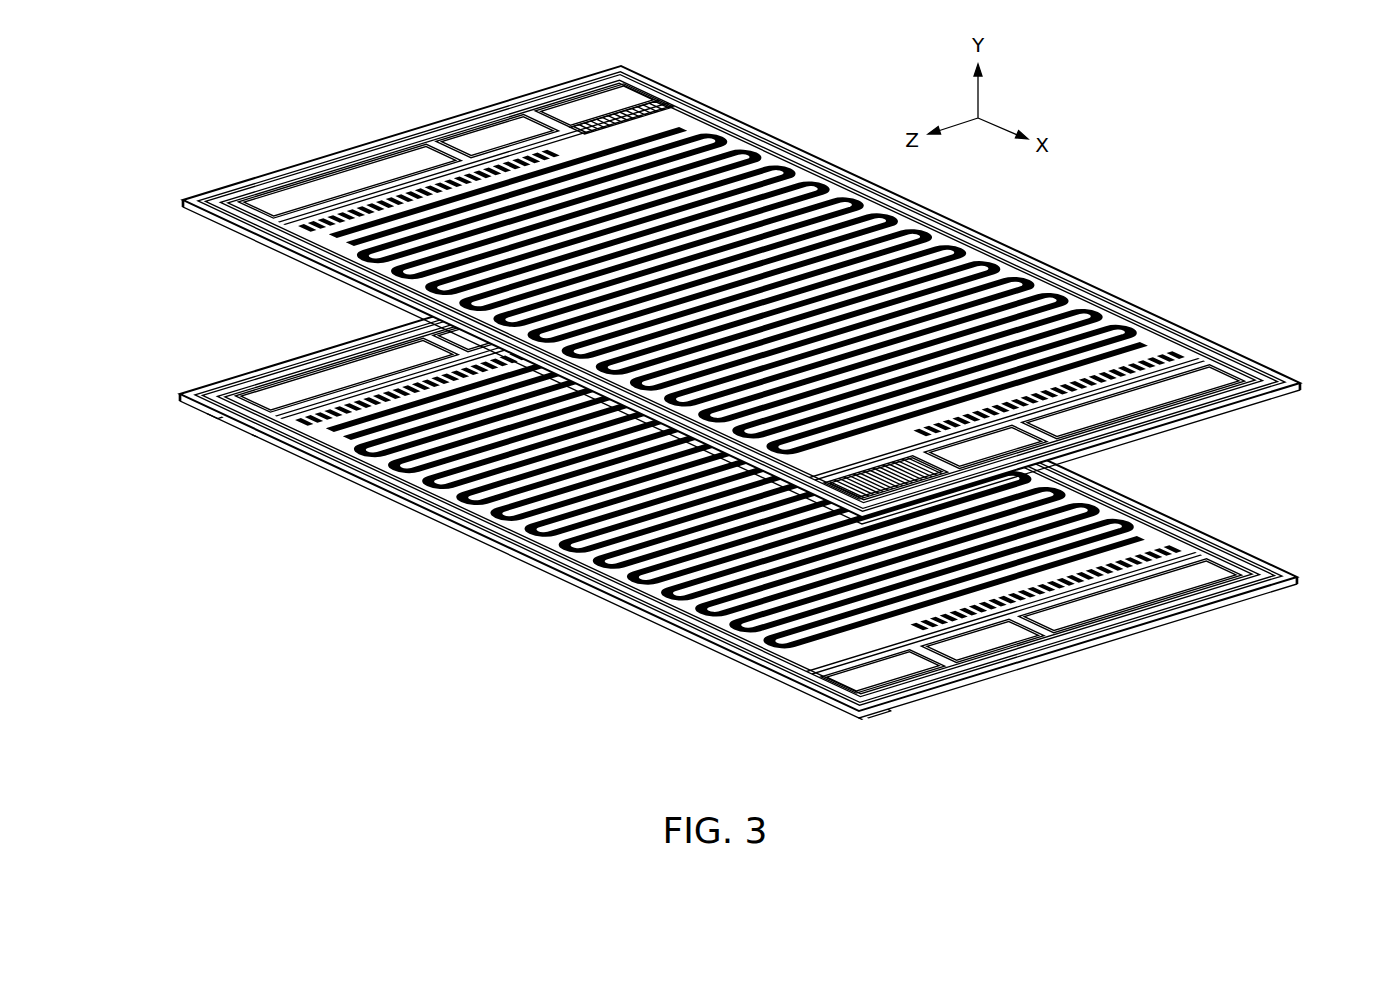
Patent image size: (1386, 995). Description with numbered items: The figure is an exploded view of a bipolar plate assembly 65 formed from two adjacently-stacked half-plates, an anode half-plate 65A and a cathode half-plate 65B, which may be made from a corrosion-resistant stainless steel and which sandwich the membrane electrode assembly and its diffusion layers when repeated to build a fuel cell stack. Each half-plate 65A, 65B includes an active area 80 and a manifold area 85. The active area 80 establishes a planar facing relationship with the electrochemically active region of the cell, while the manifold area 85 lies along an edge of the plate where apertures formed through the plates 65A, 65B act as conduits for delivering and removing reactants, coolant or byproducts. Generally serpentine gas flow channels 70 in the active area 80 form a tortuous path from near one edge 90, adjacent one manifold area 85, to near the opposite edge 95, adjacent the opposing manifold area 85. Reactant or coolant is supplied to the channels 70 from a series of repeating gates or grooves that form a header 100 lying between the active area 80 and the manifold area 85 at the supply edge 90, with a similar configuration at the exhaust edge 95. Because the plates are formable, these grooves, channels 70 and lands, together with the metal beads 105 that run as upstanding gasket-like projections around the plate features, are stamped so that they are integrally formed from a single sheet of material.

The bipolar plate assembly 65 is at (158, 180).
The anode half-plate 65A is at (1255, 343).
The cathode half-plate 65B is at (1283, 553).
The serpentine gas flow channels 70 is at (793, 193).
The active area 80 is at (245, 437).
The manifold area 85 is at (183, 410).
The edge 90 is at (330, 144).
The opposite edge 95 is at (1175, 434).
The header 100 is at (547, 148).
The metal bead 105 is at (252, 196).